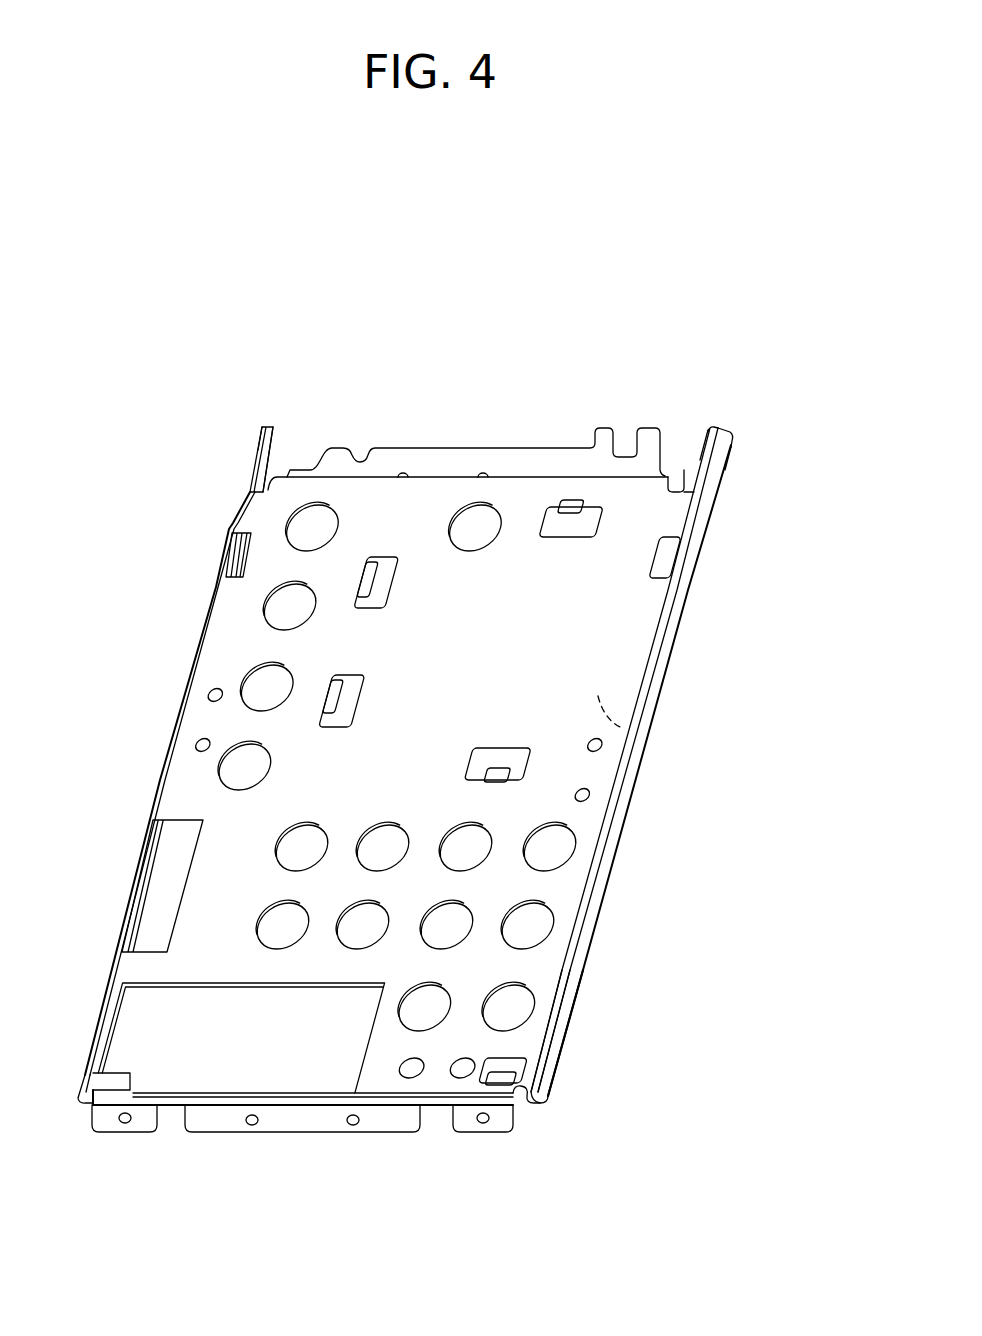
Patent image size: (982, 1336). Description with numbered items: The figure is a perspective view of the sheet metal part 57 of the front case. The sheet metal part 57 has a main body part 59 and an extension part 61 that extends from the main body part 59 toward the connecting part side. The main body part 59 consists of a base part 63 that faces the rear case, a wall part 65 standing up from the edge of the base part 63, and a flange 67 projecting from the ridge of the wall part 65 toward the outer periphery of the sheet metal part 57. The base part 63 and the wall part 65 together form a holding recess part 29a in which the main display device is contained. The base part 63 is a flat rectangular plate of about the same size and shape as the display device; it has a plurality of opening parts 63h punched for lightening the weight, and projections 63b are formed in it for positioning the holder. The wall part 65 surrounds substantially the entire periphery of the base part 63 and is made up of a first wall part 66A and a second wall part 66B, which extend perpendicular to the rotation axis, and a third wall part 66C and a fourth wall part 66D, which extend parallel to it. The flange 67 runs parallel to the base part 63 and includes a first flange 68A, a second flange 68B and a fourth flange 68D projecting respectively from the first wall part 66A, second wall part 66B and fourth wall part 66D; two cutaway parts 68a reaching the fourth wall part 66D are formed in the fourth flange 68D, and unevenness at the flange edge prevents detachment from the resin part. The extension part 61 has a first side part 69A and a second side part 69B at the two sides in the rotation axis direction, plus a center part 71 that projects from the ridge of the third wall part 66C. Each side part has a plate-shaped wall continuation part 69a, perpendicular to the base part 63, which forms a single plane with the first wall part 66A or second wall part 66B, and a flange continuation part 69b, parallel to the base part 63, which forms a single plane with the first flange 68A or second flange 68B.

The sheet metal part 57 is at (479, 255).
The main body part 59 is at (628, 640).
The extension part 61 is at (500, 455).
The center part 71 is at (417, 452).
The third wall part 66C is at (673, 480).
The base part 63 is at (650, 603).
The wall part 65 is at (648, 678).
The flange 67 is at (637, 772).
The second wall part 66B is at (592, 950).
The second flange 68B is at (588, 1000).
The second side part 69B is at (736, 440).
The flange continuation part 69b is at (255, 447).
The wall continuation part 69a is at (273, 435).
The first side part 69A is at (260, 427).
The first flange 68A is at (172, 737).
The first wall part 66A is at (145, 884).
The projections 63b is at (569, 505).
The opening parts 63h is at (548, 926).
The holding recess part 29a is at (630, 732).
The fourth wall part 66D is at (385, 1102).
The fourth flange 68D is at (298, 1120).
The cutaway parts 68a is at (450, 1118).